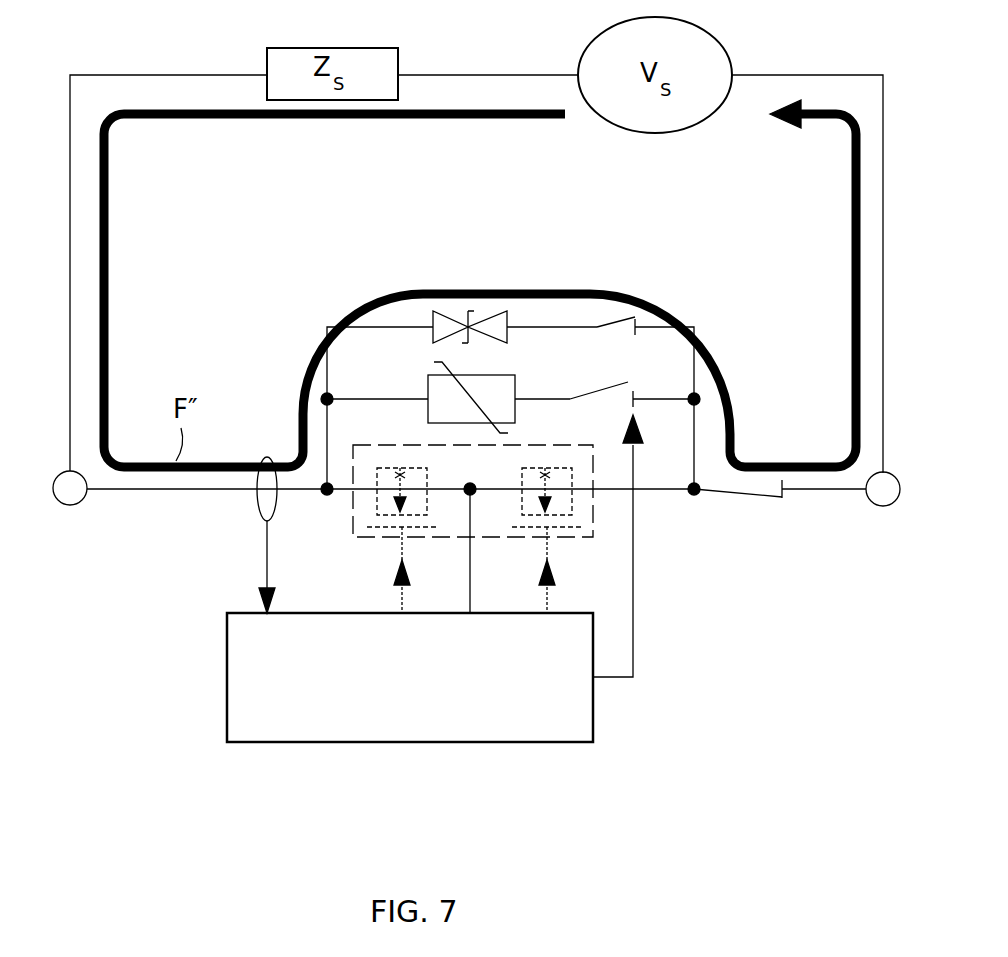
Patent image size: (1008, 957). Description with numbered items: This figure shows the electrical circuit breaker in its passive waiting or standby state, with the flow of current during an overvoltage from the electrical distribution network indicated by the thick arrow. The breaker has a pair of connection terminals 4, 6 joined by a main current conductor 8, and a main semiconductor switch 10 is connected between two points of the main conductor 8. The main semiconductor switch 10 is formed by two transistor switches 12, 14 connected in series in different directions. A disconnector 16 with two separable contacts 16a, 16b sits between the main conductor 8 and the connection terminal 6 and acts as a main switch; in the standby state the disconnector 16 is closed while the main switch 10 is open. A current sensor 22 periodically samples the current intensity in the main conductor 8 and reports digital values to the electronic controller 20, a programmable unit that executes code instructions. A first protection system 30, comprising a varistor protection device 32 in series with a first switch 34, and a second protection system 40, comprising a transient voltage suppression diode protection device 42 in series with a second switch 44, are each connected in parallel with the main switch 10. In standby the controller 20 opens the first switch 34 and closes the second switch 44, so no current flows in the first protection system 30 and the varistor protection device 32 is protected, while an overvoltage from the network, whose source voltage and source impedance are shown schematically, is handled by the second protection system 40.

The connection terminal 4 is at (60, 500).
The connection terminal 6 is at (886, 507).
The main current conductor 8 is at (135, 490).
The main semiconductor switch 10 is at (460, 529).
The transistor switch 12 is at (380, 527).
The transistor switch 14 is at (532, 528).
The disconnector 16 is at (780, 553).
The separable contact 16a is at (737, 492).
The separable contact 16b is at (788, 495).
The electronic controller 20 is at (227, 692).
The current sensor 22 is at (258, 506).
The first protection system 30 is at (537, 370).
The varistor protection device 32 is at (428, 392).
The first switch 34 is at (592, 384).
The second protection system 40 is at (346, 284).
The transient voltage suppression diode protection device 42 is at (497, 320).
The second switch 44 is at (620, 323).